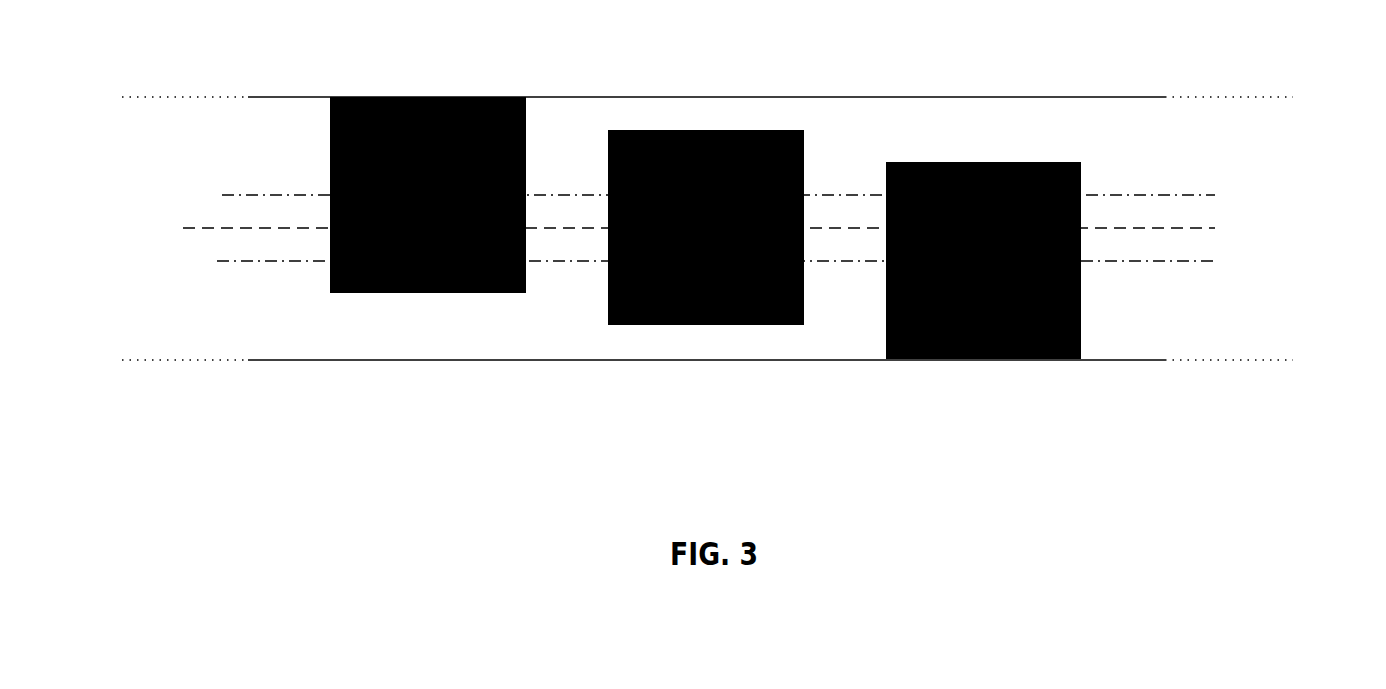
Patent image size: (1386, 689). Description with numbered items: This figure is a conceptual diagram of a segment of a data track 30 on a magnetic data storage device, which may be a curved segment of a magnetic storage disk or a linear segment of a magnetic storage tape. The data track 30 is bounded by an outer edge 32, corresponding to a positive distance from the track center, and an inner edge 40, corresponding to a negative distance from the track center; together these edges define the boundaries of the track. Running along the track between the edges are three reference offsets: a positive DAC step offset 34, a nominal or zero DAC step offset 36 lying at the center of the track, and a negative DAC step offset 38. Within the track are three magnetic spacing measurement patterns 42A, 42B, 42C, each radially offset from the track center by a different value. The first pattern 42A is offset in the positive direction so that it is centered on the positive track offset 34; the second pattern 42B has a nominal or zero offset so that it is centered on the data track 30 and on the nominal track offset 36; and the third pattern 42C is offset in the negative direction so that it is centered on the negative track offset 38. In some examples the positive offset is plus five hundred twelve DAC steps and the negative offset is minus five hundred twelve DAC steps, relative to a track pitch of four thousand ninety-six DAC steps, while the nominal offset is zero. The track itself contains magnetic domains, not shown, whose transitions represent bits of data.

The data track 30 is at (1036, 58).
The outer edge 32 is at (1293, 97).
The positive DAC step offset 34 is at (1215, 195).
The nominal (zero) DAC step offset 36 is at (1215, 228).
The negative DAC step offset 38 is at (1218, 261).
The inner edge 40 is at (1293, 360).
The magnetic spacing measurement pattern 42A is at (421, 293).
The magnetic spacing measurement pattern 42B is at (713, 325).
The magnetic spacing measurement pattern 42C is at (993, 359).